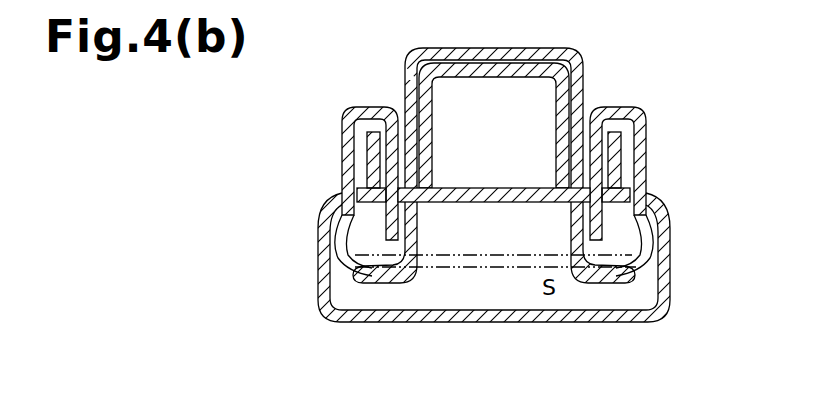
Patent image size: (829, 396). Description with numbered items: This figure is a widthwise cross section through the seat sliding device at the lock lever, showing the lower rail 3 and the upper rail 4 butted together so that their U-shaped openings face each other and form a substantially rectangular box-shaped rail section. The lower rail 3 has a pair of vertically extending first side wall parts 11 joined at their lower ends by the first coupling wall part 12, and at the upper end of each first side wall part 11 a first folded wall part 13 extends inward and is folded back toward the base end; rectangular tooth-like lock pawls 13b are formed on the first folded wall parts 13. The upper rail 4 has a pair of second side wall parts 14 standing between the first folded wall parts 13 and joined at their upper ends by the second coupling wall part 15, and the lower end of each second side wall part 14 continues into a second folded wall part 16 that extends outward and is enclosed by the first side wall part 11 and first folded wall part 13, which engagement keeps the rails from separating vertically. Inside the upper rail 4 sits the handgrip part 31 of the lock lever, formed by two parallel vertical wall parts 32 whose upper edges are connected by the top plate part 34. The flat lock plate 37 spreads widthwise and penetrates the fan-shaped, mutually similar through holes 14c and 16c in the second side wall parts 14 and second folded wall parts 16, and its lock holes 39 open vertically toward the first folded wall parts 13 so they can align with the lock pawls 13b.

The lower rail 3 is at (471, 281).
The upper rail 4 is at (494, 183).
The first side wall part 11 is at (320, 242).
The first coupling wall part 12 is at (480, 323).
The first folded wall part 13 is at (494, 173).
The lock pawl 13b is at (392, 222).
The second side wall part 14 is at (405, 80).
The through hole 14c is at (412, 272).
The second coupling wall part 15 is at (449, 48).
The second folded wall part 16 is at (496, 195).
The through hole 16c is at (335, 280).
The handgrip part 31 is at (494, 101).
The vertical wall part 32 is at (562, 97).
The top plate part 34 is at (490, 65).
The lock plate 37 is at (495, 215).
The lock hole 39 is at (382, 186).